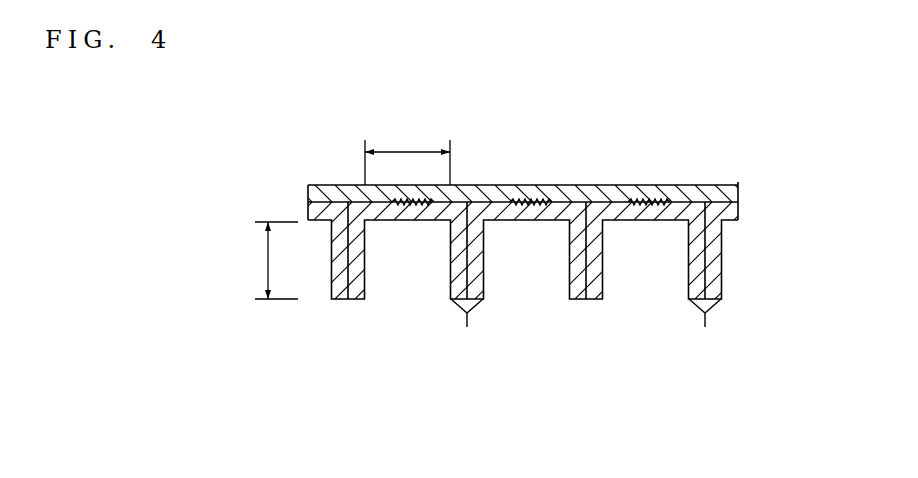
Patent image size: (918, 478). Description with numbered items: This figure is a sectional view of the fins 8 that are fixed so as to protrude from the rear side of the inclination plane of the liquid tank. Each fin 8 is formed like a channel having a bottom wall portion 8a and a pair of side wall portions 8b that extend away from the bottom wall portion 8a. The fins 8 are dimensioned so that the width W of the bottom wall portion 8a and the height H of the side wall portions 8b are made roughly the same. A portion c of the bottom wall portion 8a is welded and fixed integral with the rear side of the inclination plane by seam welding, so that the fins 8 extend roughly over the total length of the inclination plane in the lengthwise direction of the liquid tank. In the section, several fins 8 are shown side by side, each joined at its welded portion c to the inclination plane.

The fin 8 is at (523, 251).
The bottom wall portion 8a is at (494, 195).
The side wall portion 8b is at (647, 300).
The welded portion c is at (546, 196).
The width of the bottom wall portion W is at (405, 147).
The height of support member stem H is at (263, 259).